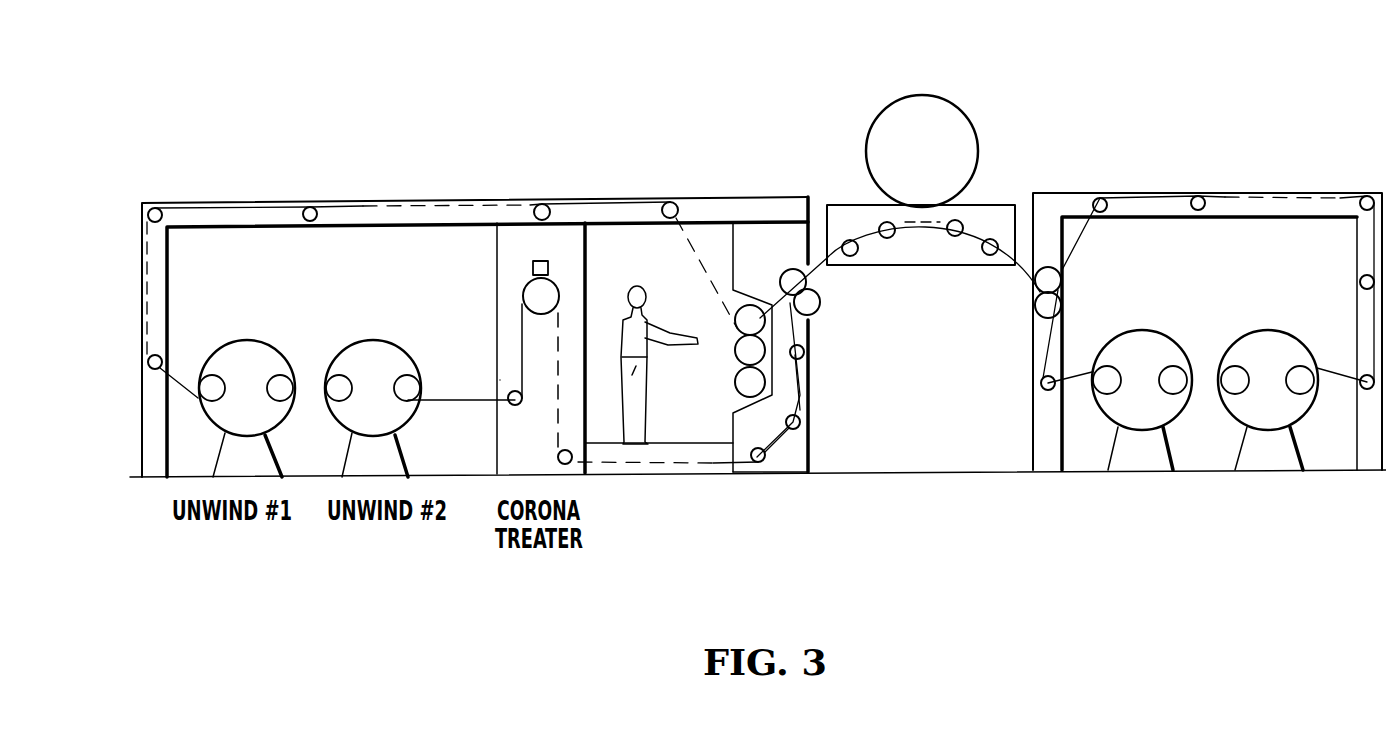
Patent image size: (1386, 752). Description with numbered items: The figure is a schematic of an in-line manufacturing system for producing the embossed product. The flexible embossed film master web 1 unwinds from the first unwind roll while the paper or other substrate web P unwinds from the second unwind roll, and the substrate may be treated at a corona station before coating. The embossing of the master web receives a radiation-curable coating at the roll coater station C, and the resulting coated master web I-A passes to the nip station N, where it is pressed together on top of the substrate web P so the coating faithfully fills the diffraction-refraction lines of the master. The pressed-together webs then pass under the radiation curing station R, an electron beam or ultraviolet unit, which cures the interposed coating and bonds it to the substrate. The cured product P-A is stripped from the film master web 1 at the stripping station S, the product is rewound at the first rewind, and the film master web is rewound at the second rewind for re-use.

The film master web 1 is at (182, 372).
The substrate web P is at (463, 388).
The nip station N is at (756, 258).
The coated master web I-A is at (780, 335).
The roll coater station C is at (781, 492).
The radiation curing station R is at (921, 208).
The stripping station S is at (1078, 279).
The product P-A is at (1146, 218).